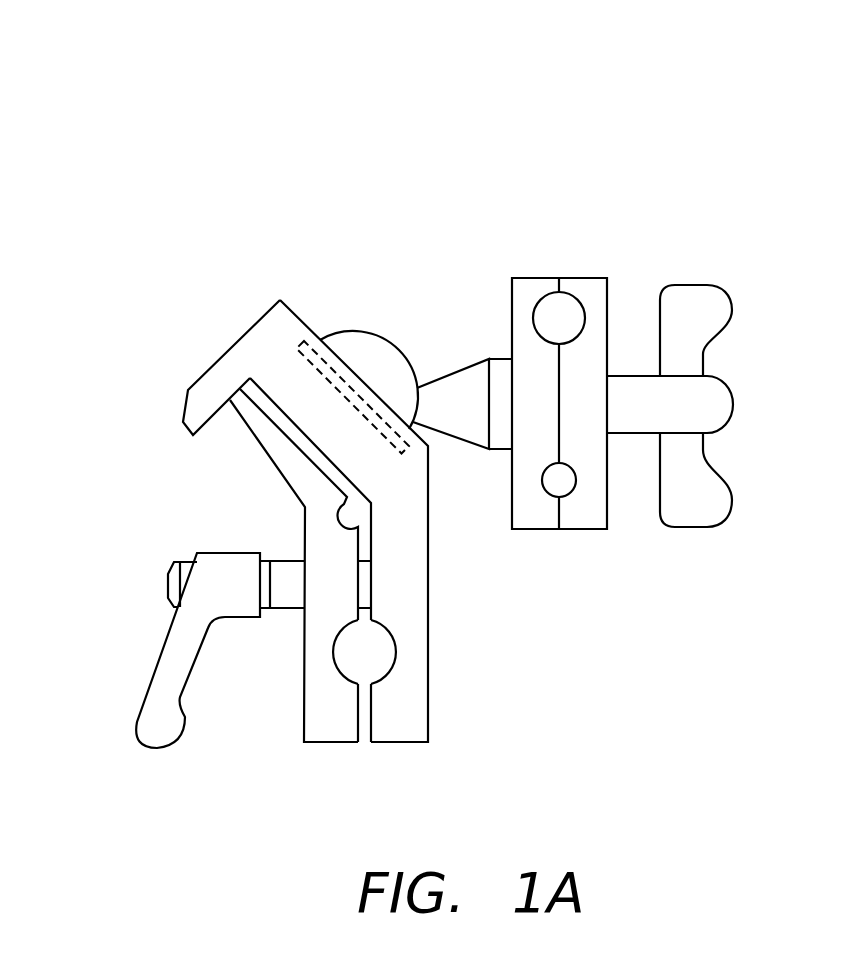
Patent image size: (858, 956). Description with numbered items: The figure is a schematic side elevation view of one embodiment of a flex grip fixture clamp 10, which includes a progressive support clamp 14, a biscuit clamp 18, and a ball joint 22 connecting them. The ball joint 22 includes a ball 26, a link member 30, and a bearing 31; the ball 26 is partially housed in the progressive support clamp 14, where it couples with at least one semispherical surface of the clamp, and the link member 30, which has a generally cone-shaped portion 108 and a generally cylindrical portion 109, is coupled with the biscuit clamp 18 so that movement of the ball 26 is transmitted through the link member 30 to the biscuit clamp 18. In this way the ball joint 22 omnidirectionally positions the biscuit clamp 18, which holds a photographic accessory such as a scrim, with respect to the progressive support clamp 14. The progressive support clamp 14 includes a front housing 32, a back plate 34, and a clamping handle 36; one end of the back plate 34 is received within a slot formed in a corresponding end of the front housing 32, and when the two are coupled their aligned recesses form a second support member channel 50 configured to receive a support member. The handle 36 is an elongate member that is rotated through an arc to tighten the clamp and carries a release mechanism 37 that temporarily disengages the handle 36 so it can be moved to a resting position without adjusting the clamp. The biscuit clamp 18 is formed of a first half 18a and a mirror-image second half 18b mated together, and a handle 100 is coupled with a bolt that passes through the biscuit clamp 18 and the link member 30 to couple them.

The flex grip fixture clamp 10 is at (498, 120).
The progressive support clamp 14 is at (238, 728).
The biscuit clamp 18 is at (581, 270).
The first half 18a is at (543, 530).
The second half 18b is at (593, 530).
The ball joint 22 is at (347, 318).
The ball 26 is at (397, 353).
The link member 30 is at (466, 358).
The bearing 31 is at (300, 343).
The front housing 32 is at (428, 713).
The back plate 34 is at (272, 460).
The clamping handle 36 is at (157, 665).
The release mechanism 37 is at (175, 562).
The second support member channel 50 is at (365, 652).
The handle 100 is at (733, 304).
The cone-shaped portion 108 is at (460, 442).
The cylindrical portion 109 is at (500, 452).